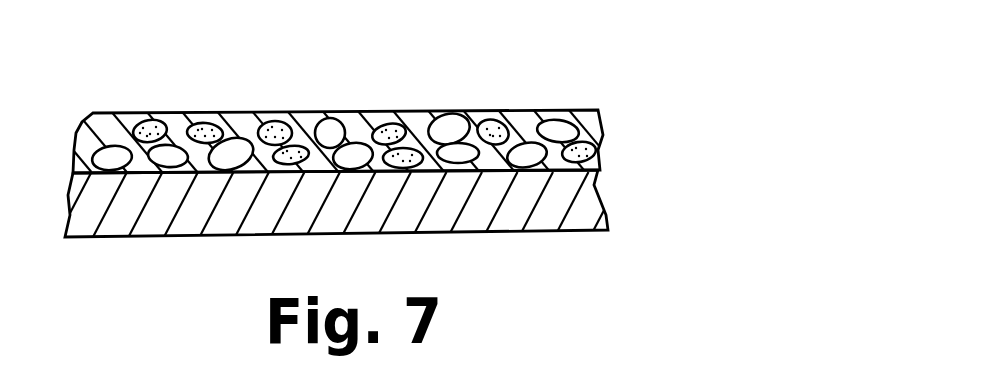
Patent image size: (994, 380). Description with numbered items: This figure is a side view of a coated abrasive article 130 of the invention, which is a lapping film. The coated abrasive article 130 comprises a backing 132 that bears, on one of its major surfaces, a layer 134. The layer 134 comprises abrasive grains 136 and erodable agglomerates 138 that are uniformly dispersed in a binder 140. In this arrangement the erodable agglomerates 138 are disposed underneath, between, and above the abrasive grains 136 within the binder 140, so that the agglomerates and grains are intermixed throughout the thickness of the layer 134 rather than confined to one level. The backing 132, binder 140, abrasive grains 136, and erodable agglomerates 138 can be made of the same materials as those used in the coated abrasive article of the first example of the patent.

The coated abrasive article 130 is at (388, 163).
The backing 132 is at (583, 218).
The layer 134 is at (367, 109).
The abrasive grains 136 is at (473, 140).
The erodable agglomerates 138 is at (417, 150).
The binder 140 is at (528, 118).